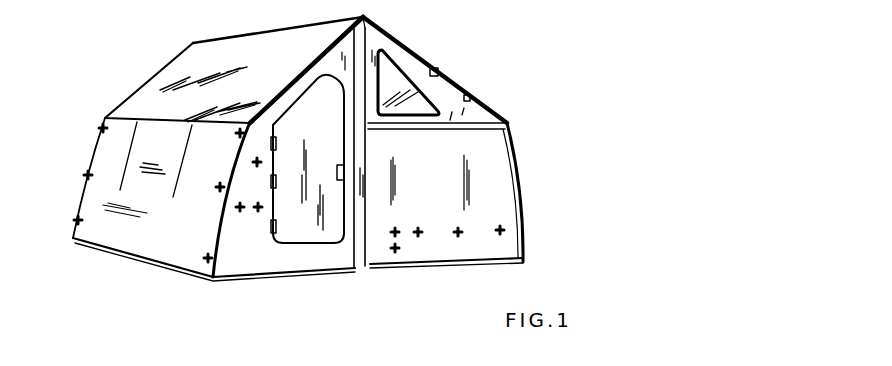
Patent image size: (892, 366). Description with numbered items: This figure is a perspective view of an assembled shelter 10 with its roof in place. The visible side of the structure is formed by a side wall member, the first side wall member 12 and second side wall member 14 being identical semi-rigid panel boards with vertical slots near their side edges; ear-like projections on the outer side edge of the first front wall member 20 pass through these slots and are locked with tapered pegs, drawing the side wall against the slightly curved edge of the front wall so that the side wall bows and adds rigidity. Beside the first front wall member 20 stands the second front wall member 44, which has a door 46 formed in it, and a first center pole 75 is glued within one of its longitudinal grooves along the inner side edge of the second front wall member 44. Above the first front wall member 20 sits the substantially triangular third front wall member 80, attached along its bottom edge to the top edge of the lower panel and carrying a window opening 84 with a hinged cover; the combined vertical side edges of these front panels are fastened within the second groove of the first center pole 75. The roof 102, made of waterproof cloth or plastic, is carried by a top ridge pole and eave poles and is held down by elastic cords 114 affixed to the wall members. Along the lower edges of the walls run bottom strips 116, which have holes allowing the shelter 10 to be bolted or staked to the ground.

The shelter 10 is at (508, 95).
The first side wall member 12 is at (520, 190).
The second side wall member 14 is at (105, 145).
The first front wall member 20 is at (493, 155).
The second front wall member 44 is at (258, 260).
The door 46 is at (313, 233).
The first center pole 75 is at (362, 160).
The third front wall member 80 is at (453, 103).
The window opening 84 is at (400, 85).
The roof 102 is at (180, 65).
The elastic cords 114 is at (177, 157).
The bottom strips 116 is at (147, 260).